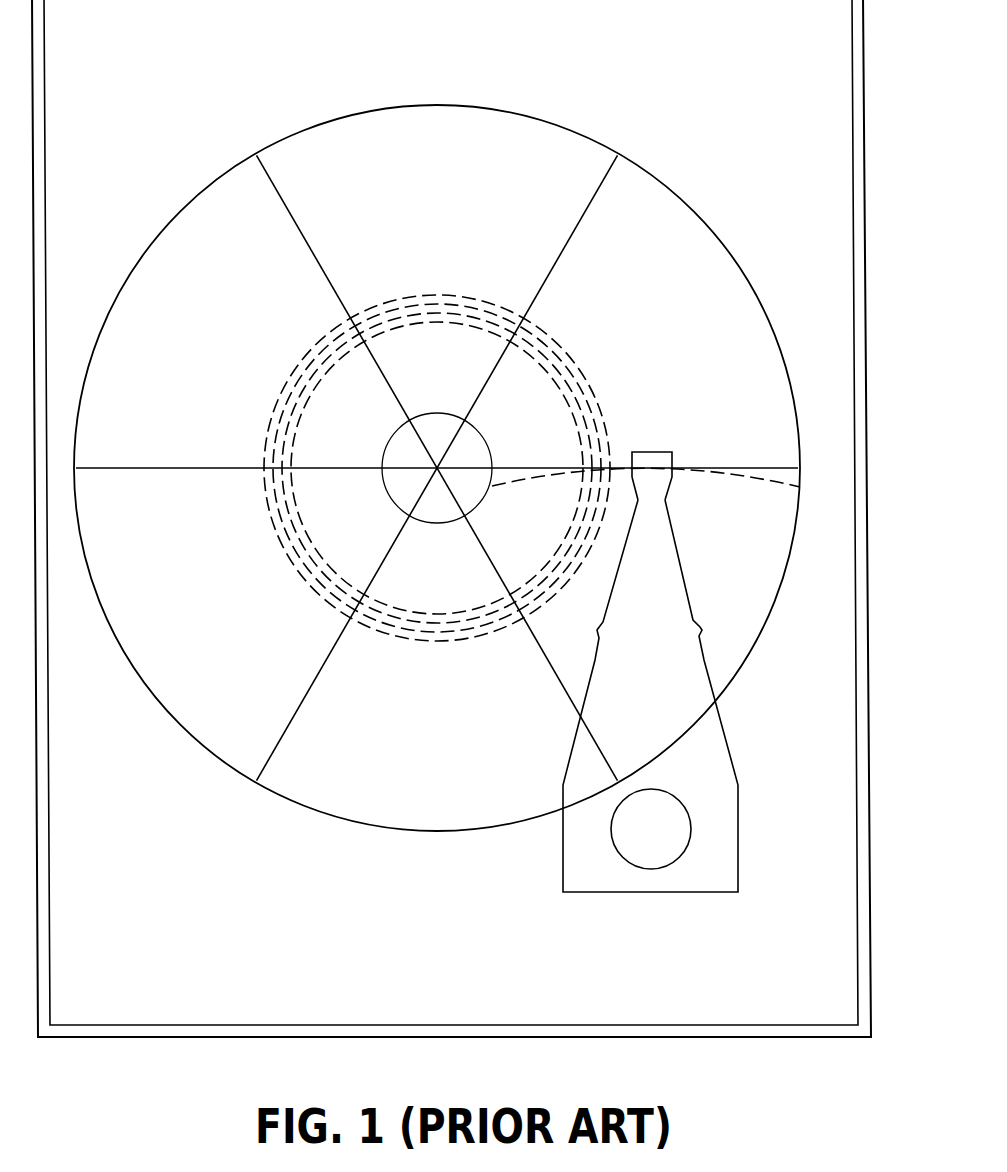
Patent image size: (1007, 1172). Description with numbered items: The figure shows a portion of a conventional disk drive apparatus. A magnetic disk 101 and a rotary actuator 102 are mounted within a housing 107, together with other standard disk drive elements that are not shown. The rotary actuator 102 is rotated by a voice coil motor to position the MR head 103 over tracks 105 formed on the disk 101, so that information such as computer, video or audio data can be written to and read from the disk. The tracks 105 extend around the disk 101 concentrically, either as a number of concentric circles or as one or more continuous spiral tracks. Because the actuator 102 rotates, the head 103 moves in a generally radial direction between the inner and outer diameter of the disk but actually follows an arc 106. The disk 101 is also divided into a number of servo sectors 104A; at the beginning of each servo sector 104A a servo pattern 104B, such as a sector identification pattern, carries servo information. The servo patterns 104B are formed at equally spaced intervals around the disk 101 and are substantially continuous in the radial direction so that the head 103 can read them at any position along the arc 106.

The magnetic disk 101 is at (724, 296).
The rotary actuator 102 is at (722, 787).
The MR head 103 is at (657, 463).
The servo sector 104A is at (168, 267).
The servo pattern 104B is at (307, 243).
The tracks 105 is at (590, 392).
The arc 106 is at (762, 481).
The housing 107 is at (858, 118).